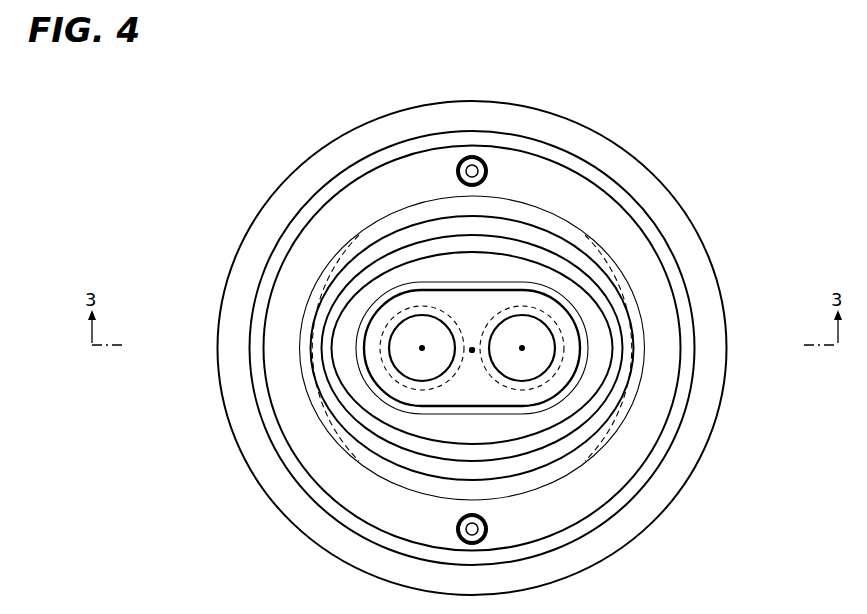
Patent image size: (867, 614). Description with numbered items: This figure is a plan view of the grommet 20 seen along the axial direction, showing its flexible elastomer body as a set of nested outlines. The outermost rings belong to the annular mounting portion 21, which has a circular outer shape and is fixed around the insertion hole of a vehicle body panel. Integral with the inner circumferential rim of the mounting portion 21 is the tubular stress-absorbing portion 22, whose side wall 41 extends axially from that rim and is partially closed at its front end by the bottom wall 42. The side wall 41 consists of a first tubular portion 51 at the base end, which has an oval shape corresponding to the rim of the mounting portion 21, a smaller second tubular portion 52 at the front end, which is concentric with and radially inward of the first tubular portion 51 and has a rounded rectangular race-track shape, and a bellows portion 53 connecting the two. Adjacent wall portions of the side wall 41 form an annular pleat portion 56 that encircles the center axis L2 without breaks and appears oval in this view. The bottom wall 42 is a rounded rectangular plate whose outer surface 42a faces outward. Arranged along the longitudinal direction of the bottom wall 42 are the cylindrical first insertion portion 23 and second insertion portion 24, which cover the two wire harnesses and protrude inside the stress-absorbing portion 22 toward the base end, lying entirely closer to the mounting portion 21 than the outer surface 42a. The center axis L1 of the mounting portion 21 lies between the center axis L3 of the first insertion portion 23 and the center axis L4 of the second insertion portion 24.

The grommet 20 is at (754, 160).
The mounting portion 21 is at (667, 311).
The stress-absorbing portion 22 is at (648, 371).
The first insertion portion 23 is at (422, 348).
The second insertion portion 24 is at (522, 348).
The side wall 41 is at (566, 216).
The bottom wall 42 is at (535, 408).
The outer surface of the bottom wall 42a is at (486, 306).
The first tubular portion 51 is at (335, 445).
The second tubular portion 52 is at (460, 284).
The bellows portion 53 is at (318, 303).
The pleat portion 56 is at (600, 408).
The center axis of the mounting portion L1 is at (470, 352).
The center axis L2 is at (472, 350).
The center axis of the first insertion portion L3 is at (357, 394).
The center axis of the second insertion portion L4 is at (624, 283).